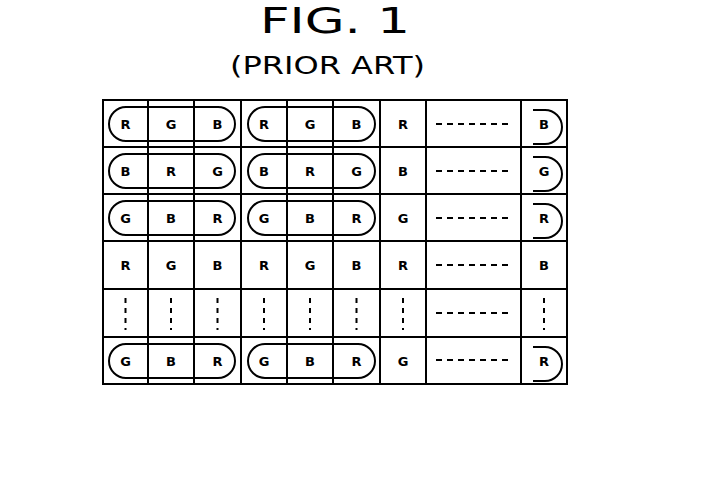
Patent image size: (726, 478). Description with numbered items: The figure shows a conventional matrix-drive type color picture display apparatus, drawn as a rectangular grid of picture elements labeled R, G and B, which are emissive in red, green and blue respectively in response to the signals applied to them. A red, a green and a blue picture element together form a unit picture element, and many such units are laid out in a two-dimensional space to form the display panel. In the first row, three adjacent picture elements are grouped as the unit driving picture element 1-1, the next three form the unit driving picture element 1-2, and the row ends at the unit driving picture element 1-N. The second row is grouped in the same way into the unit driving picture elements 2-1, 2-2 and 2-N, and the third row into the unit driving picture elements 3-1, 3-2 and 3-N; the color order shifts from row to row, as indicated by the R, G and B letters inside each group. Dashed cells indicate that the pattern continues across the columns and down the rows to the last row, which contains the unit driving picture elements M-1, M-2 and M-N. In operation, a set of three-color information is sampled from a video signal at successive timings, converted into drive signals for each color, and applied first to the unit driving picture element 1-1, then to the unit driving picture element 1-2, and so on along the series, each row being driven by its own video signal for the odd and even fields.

The unit driving picture element 1-1 is at (109, 126).
The unit driving picture element 2-1 is at (109, 173).
The unit driving picture element 3-1 is at (109, 220).
The unit driving picture element M-1 is at (109, 363).
The unit driving picture element 1-2 is at (304, 85).
The unit driving picture element 2-2 is at (367, 158).
The unit driving picture element 3-2 is at (367, 205).
The unit driving picture element M-2 is at (280, 378).
The unit driving picture element 1-N is at (563, 128).
The unit driving picture element 2-N is at (563, 175).
The unit driving picture element 3-N is at (563, 222).
The unit driving picture element M-N is at (563, 365).